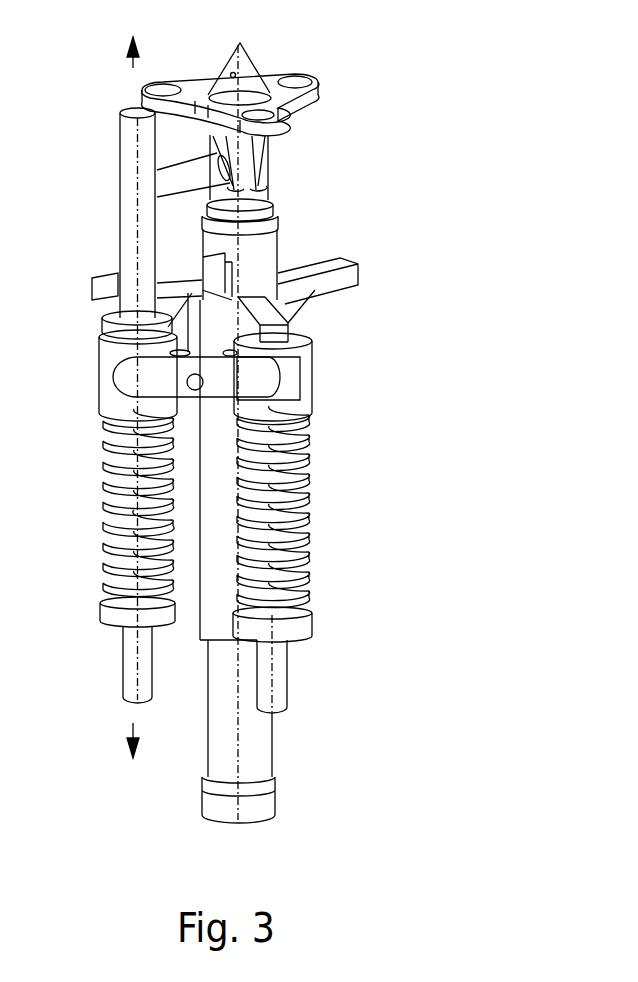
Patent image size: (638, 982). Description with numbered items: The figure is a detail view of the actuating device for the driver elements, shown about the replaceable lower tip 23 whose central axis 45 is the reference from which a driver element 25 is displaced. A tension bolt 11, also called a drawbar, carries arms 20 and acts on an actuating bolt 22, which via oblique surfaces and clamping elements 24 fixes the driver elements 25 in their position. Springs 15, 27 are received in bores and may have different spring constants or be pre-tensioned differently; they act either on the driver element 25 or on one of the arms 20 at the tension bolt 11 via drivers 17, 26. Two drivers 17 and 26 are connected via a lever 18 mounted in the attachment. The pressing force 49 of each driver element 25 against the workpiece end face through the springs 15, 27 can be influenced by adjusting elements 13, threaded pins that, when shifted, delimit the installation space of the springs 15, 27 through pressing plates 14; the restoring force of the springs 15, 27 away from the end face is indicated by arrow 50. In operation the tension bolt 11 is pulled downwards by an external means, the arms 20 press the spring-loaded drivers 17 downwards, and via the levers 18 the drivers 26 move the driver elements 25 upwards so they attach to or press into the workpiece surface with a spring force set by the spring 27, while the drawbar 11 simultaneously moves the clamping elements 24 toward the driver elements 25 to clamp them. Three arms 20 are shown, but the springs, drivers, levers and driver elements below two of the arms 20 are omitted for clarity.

The tension bolt 11 is at (255, 805).
The adjusting element 13 is at (135, 668).
The pressing plate 14 is at (118, 617).
The spring 15 is at (300, 573).
The driver 17 is at (287, 382).
The lever 18 is at (155, 382).
The arm 20 is at (313, 284).
The actuating bolt 22 is at (247, 165).
The lower tip 23 is at (320, 93).
The clamping element 24 is at (165, 188).
The driver element 25 is at (128, 153).
The driver 26 is at (110, 367).
The spring 27 is at (117, 493).
The central axis 45 is at (245, 72).
The pressing force 49 is at (133, 62).
The restoring force arrow 50 is at (133, 732).